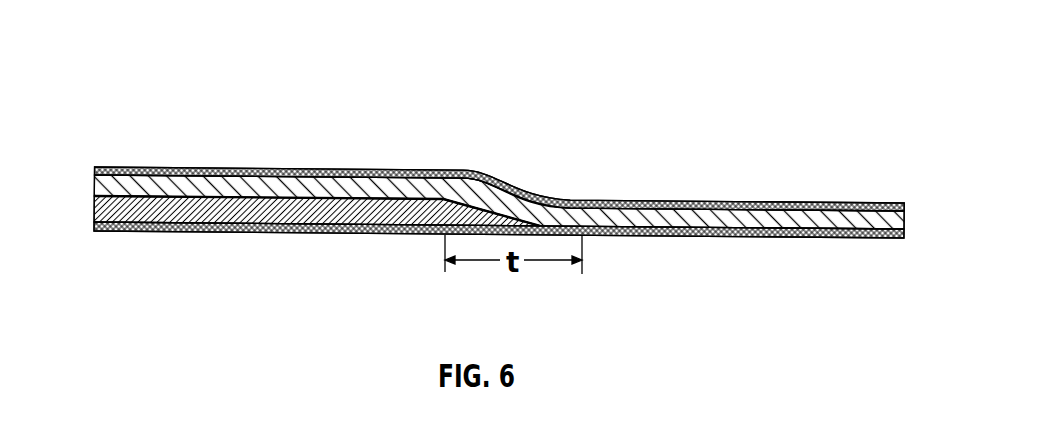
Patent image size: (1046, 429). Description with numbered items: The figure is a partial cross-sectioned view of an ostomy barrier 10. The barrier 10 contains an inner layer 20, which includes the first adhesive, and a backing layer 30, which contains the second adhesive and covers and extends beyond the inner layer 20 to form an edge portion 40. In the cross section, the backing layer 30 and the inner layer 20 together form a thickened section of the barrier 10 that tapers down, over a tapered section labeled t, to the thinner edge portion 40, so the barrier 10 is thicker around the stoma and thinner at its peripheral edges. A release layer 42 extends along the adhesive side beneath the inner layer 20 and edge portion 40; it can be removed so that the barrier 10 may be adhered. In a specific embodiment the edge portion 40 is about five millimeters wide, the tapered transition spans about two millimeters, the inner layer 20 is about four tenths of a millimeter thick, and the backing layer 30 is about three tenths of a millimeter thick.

The barrier 10 is at (221, 79).
The inner layer 20 is at (388, 226).
The backing layer 30 is at (358, 193).
The edge portion 40 is at (623, 200).
The release layer 42 is at (260, 235).